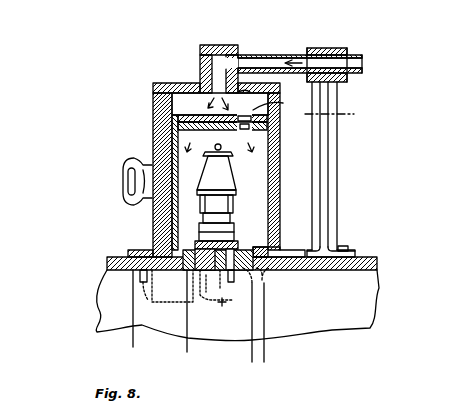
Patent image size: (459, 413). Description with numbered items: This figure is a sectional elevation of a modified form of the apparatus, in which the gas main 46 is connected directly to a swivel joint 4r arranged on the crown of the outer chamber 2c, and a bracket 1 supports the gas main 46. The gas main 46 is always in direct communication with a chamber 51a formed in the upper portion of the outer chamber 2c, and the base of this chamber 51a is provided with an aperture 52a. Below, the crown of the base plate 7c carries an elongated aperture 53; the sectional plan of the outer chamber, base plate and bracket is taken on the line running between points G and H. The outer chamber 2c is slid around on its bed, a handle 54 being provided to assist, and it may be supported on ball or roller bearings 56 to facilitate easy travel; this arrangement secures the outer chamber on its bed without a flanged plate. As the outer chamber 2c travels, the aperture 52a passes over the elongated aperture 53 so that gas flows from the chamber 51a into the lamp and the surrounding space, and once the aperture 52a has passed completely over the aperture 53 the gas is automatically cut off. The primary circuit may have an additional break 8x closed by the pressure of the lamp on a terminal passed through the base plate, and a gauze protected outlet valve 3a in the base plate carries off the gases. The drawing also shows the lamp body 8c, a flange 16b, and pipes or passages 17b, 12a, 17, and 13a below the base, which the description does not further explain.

The swivel joint 4r is at (200, 49).
The gas main 46 is at (362, 64).
The bracket 1 is at (327, 153).
The section line point H is at (337, 113).
The outer chamber 2c is at (196, 84).
The chamber 51a is at (174, 100).
The aperture 52a is at (281, 171).
The base plate 7c is at (165, 142).
The section line point G is at (178, 111).
The elongated aperture 53 is at (268, 146).
The handle 54 is at (123, 183).
The burner 8c is at (282, 251).
The flange 16b is at (150, 250).
The ball or roller bearings 56 is at (242, 268).
The pipe 17b is at (131, 339).
The pipe 12a is at (187, 348).
The gauze protected outlet valve 3a is at (168, 288).
The pipe 17 is at (172, 310).
The additional break 8x is at (216, 296).
The passage 13a is at (263, 321).